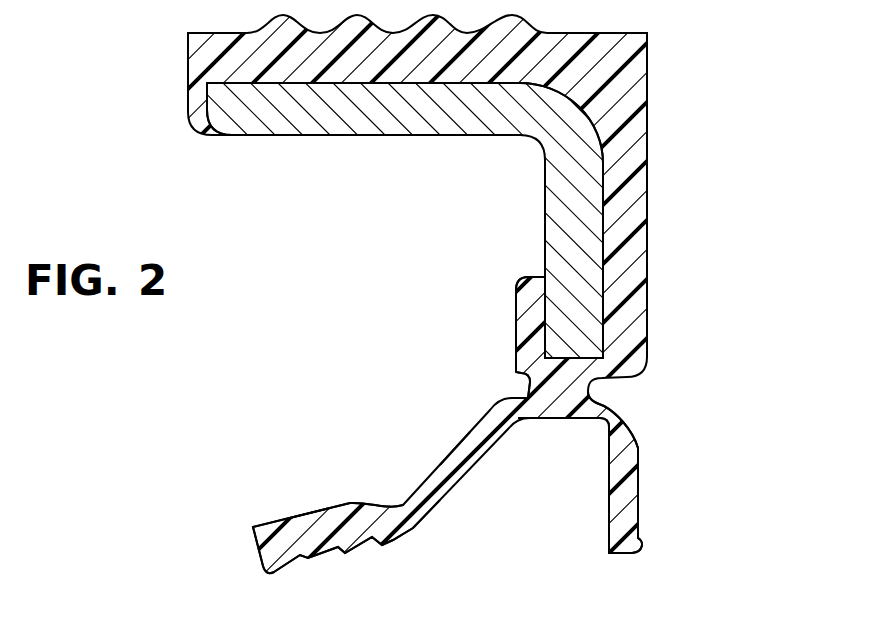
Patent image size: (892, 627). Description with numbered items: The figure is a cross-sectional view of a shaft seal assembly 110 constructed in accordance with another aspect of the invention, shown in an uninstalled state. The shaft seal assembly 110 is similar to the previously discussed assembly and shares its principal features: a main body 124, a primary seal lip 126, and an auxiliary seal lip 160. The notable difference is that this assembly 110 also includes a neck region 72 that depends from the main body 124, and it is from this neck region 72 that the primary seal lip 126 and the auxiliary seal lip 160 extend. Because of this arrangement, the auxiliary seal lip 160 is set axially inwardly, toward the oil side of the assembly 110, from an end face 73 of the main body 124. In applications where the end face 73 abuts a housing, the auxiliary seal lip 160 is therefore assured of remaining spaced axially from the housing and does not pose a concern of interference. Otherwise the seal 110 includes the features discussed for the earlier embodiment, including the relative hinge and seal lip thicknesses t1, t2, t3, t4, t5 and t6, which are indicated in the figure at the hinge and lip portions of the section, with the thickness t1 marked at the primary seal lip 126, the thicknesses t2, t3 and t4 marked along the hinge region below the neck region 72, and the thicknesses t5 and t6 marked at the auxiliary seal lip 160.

The shaft seal assembly 110 is at (683, 72).
The end face 73 is at (648, 294).
The main body 124 is at (528, 352).
The neck region 72 is at (530, 384).
The primary seal lip 126 is at (280, 508).
The auxiliary seal lip 160 is at (653, 492).
The thickness t1 is at (330, 578).
The thickness t2 is at (393, 478).
The thickness t3 is at (417, 527).
The thickness t4 is at (598, 427).
The thickness t5 is at (636, 438).
The thickness t6 is at (613, 403).